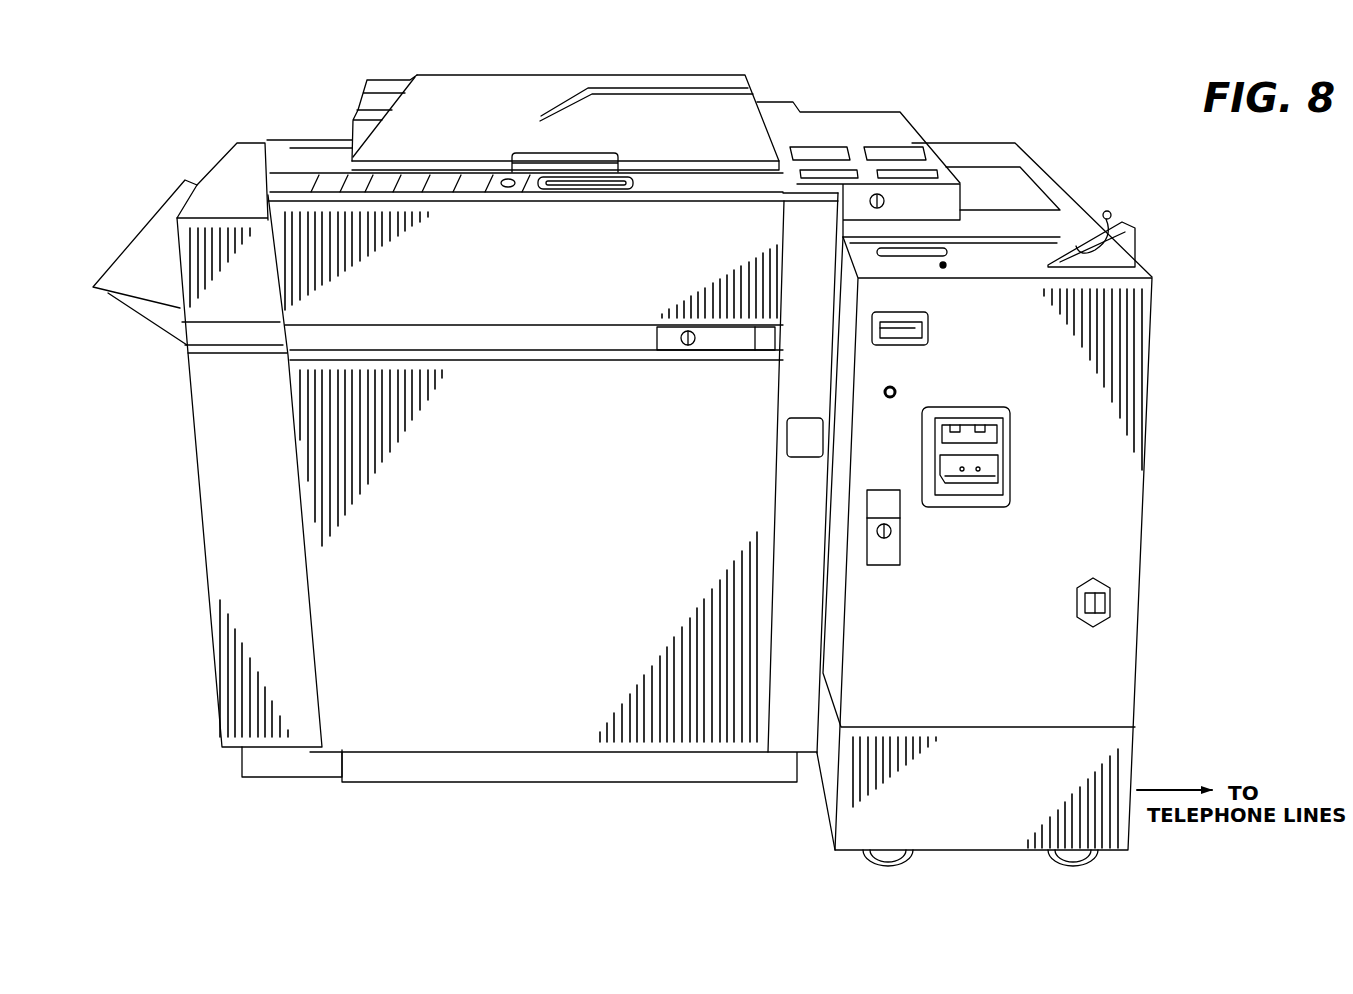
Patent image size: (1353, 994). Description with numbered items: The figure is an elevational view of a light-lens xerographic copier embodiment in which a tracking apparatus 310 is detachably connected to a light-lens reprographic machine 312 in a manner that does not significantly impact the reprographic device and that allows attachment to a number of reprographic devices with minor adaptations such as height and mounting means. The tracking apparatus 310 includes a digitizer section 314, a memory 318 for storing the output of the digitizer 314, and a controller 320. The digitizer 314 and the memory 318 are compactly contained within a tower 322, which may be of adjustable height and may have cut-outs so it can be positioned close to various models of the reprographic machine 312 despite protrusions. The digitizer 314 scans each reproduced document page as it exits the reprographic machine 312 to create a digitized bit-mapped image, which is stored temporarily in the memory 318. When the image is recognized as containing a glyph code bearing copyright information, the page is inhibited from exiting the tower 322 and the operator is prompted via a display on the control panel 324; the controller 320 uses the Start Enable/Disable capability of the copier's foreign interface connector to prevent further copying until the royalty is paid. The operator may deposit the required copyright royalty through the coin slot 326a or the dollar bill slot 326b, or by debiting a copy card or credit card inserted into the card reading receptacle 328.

The tracking apparatus 310 is at (800, 820).
The reprographic machine 312 is at (678, 50).
The digitizer section 314 is at (278, 157).
The memory 318 is at (178, 466).
The controller 320 is at (1208, 520).
The tower 322 is at (197, 697).
The control panel 324 is at (943, 263).
The coin slot 326a is at (1125, 240).
The dollar bill slot 326b is at (1000, 468).
The card reading receptacle 328 is at (928, 318).